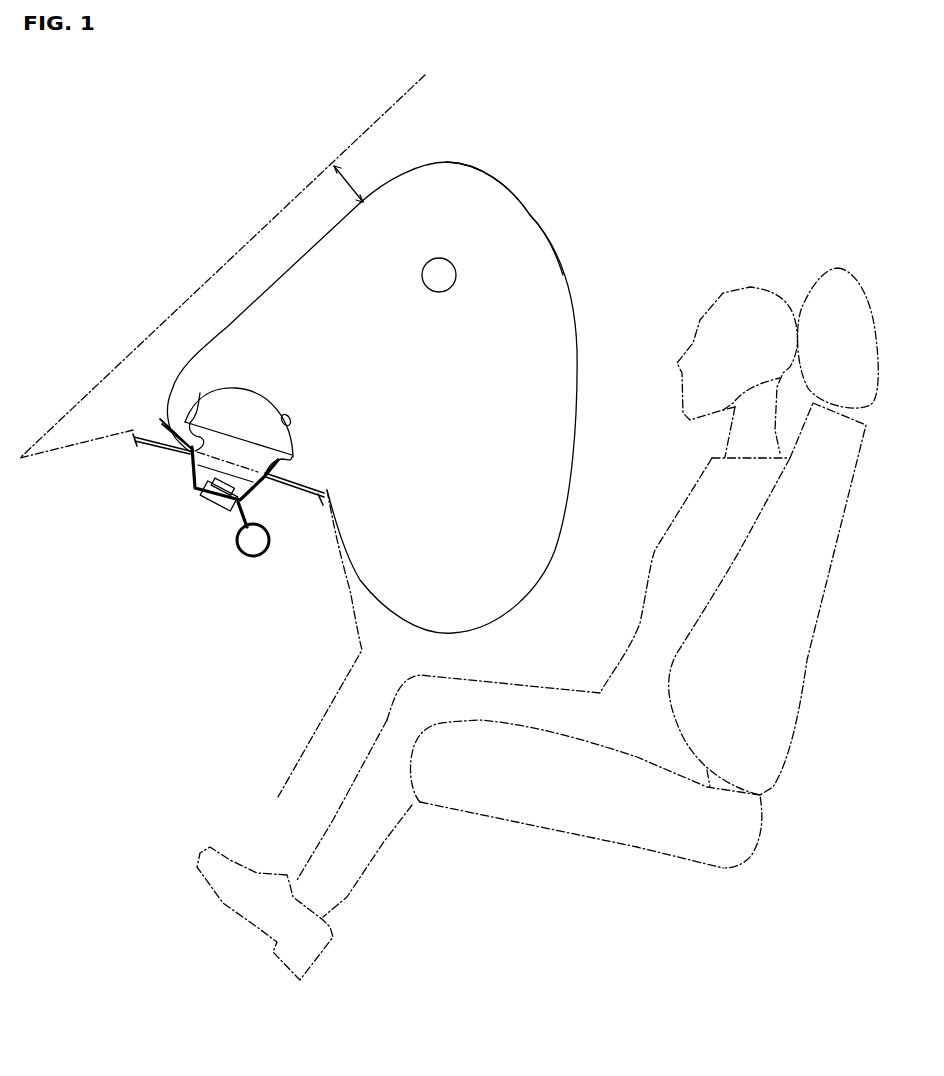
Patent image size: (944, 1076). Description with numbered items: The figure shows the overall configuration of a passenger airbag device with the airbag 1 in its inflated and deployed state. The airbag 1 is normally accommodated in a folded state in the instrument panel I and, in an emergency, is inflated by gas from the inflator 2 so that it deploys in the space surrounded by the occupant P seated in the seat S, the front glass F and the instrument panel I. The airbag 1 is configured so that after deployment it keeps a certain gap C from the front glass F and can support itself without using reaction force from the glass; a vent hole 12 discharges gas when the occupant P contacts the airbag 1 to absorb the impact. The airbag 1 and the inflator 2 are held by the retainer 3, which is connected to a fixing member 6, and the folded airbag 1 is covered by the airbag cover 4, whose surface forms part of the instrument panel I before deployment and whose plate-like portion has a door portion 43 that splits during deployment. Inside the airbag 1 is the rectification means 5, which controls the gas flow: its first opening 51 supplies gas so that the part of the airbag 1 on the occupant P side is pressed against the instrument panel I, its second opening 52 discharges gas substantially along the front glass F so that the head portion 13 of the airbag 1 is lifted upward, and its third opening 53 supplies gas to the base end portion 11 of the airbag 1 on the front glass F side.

The airbag 1 is at (365, 396).
The inflator 2 is at (211, 506).
The retainer 3 is at (187, 490).
The airbag cover 4 is at (148, 441).
The rectification means 5 is at (265, 412).
The fixing member 6 is at (250, 558).
The base end portion 11 is at (167, 359).
The vent hole 12 is at (439, 293).
The head portion 13 is at (550, 192).
The door portion 43 is at (158, 420).
The first opening 51 is at (285, 468).
The second opening 52 is at (288, 418).
The third opening 53 is at (205, 420).
The front glass F is at (274, 224).
The gap C is at (348, 183).
The instrument panel I is at (358, 630).
The occupant P is at (752, 288).
The seat S is at (808, 662).